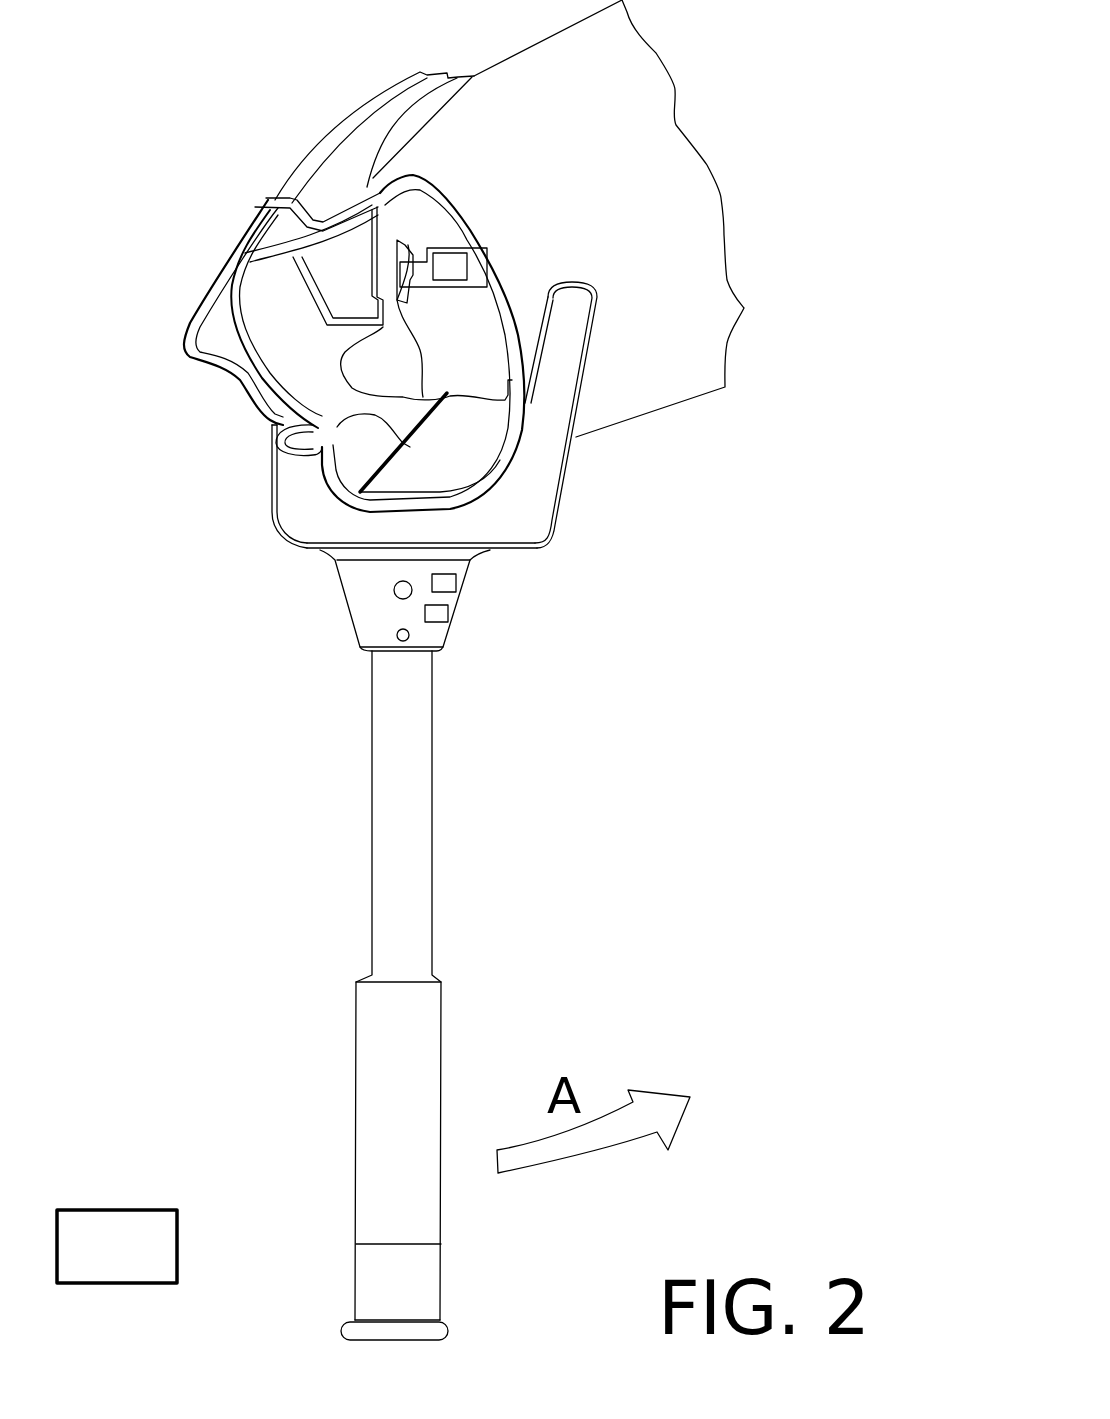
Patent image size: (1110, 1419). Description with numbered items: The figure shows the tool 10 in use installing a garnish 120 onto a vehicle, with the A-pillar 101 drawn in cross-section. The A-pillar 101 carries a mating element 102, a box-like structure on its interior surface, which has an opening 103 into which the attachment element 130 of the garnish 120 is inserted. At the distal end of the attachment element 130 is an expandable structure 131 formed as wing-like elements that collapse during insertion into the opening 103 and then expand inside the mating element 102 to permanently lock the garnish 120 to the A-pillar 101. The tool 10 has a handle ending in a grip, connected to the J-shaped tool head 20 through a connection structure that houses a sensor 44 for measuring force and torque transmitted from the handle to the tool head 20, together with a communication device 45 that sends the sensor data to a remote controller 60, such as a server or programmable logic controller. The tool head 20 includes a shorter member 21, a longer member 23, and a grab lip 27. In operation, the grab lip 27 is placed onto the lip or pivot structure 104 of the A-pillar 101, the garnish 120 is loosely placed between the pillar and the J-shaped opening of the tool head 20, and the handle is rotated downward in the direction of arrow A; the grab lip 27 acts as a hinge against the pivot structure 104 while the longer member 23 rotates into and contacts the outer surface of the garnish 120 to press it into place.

The tool 10 is at (263, 735).
The tool head 20 is at (533, 511).
The left arm of bracket 21 is at (293, 481).
The longer member 23 is at (565, 347).
The grab lip 27 is at (315, 434).
The sensor 44 is at (457, 583).
The communication device 45 is at (448, 613).
The controller 60 is at (116, 1210).
The A-pillar 101 is at (213, 268).
The mating element 102 is at (350, 338).
The opening 103 is at (283, 203).
The pivot structure 104 is at (398, 432).
The garnish 120 is at (670, 210).
The attachment element 130 is at (420, 297).
The expandable structure 131 is at (403, 243).